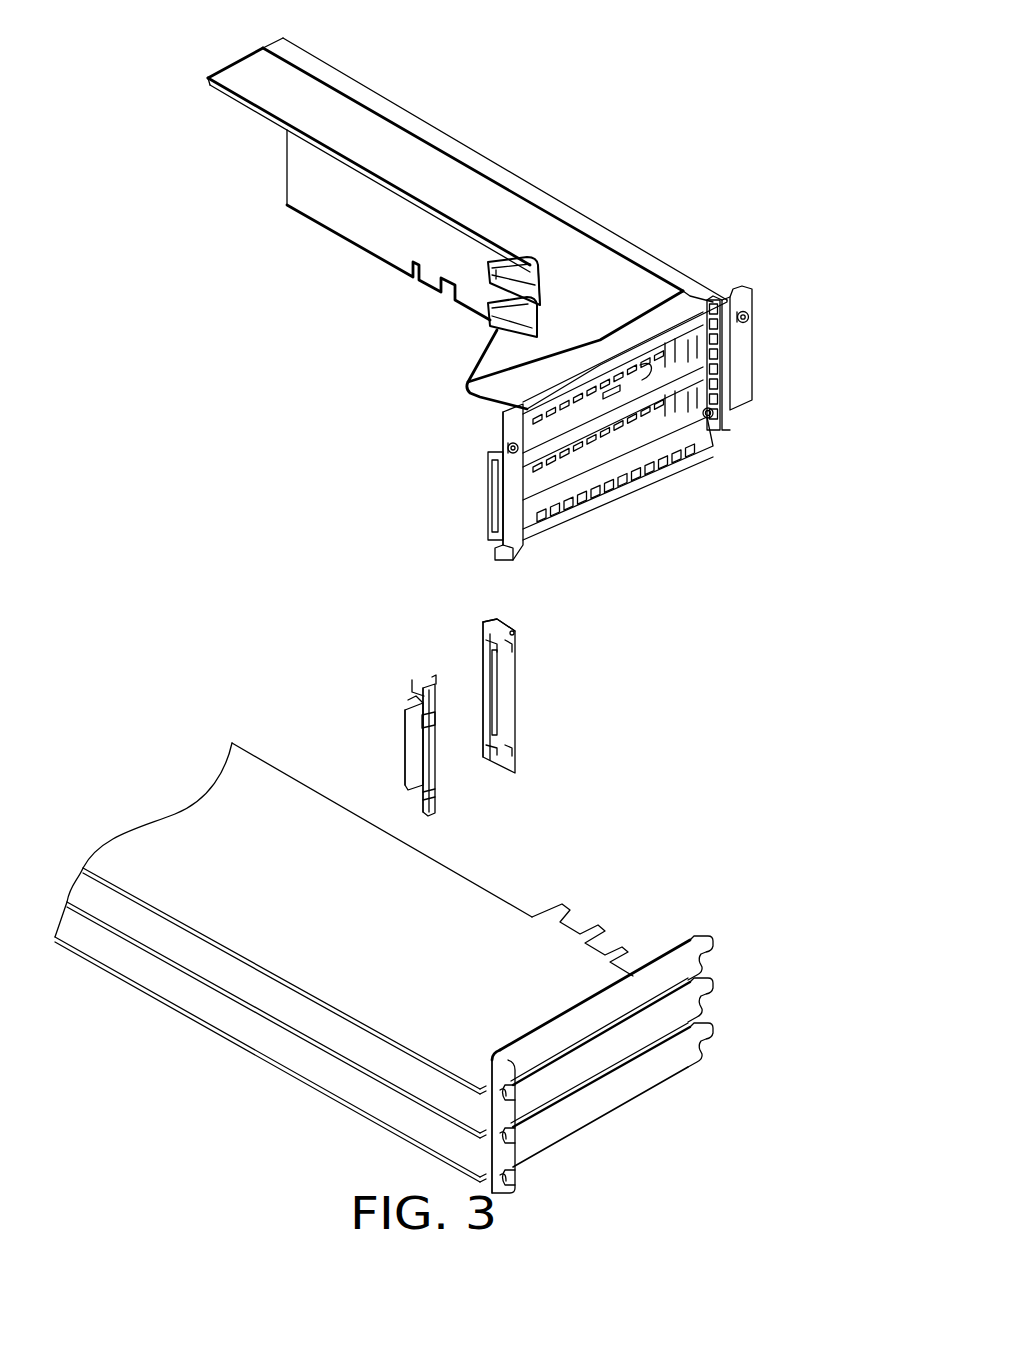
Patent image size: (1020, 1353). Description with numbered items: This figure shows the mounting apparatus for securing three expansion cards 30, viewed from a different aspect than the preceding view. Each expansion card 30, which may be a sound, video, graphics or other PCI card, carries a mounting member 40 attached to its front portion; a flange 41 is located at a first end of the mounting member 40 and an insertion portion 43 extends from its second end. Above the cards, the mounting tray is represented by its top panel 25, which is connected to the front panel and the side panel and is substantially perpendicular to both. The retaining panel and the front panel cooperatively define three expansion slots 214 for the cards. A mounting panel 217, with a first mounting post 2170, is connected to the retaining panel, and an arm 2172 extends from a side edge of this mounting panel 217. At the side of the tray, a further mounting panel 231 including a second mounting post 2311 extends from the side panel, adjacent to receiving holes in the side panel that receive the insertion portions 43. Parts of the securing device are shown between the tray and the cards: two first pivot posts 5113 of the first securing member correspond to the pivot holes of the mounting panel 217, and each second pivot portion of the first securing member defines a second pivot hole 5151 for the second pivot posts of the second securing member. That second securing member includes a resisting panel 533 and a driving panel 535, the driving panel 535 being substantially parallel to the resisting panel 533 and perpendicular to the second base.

The top panel 25 is at (482, 192).
The mounting panel 231 is at (757, 364).
The second mounting post 2311 is at (751, 317).
The expansion slots 214 is at (630, 433).
The mounting panel 217 is at (513, 518).
The first mounting post 2170 is at (505, 446).
The arm 2172 is at (490, 478).
The first pivot posts 5113 is at (512, 634).
The second pivot hole 5151 is at (490, 626).
The resisting panel 533 is at (430, 775).
The driving panel 535 is at (413, 725).
The expansion card 30 is at (187, 830).
The mounting member 40 is at (658, 973).
The flange 41 is at (497, 1077).
The insertion portion 43 is at (708, 945).